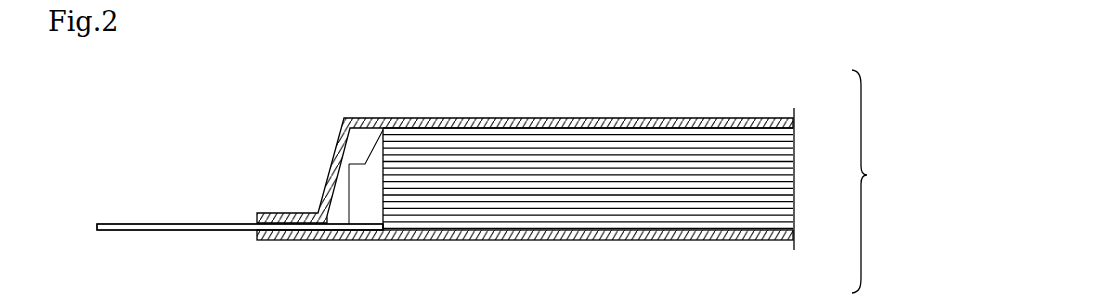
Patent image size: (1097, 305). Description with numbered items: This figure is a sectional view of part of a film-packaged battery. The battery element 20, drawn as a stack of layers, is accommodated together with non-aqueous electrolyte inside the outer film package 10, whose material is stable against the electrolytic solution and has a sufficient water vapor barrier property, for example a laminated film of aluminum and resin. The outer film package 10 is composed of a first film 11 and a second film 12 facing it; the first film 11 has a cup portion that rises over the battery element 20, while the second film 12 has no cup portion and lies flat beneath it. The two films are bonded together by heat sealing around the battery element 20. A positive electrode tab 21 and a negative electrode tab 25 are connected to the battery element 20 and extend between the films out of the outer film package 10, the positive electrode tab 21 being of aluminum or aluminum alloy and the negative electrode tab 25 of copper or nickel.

The outer film package 10 is at (850, 181).
The first film 11 is at (772, 118).
The second film 12 is at (771, 240).
The battery element 20 is at (491, 158).
The positive electrode tab 21 is at (128, 230).
The negative electrode tab 25 is at (240, 227).